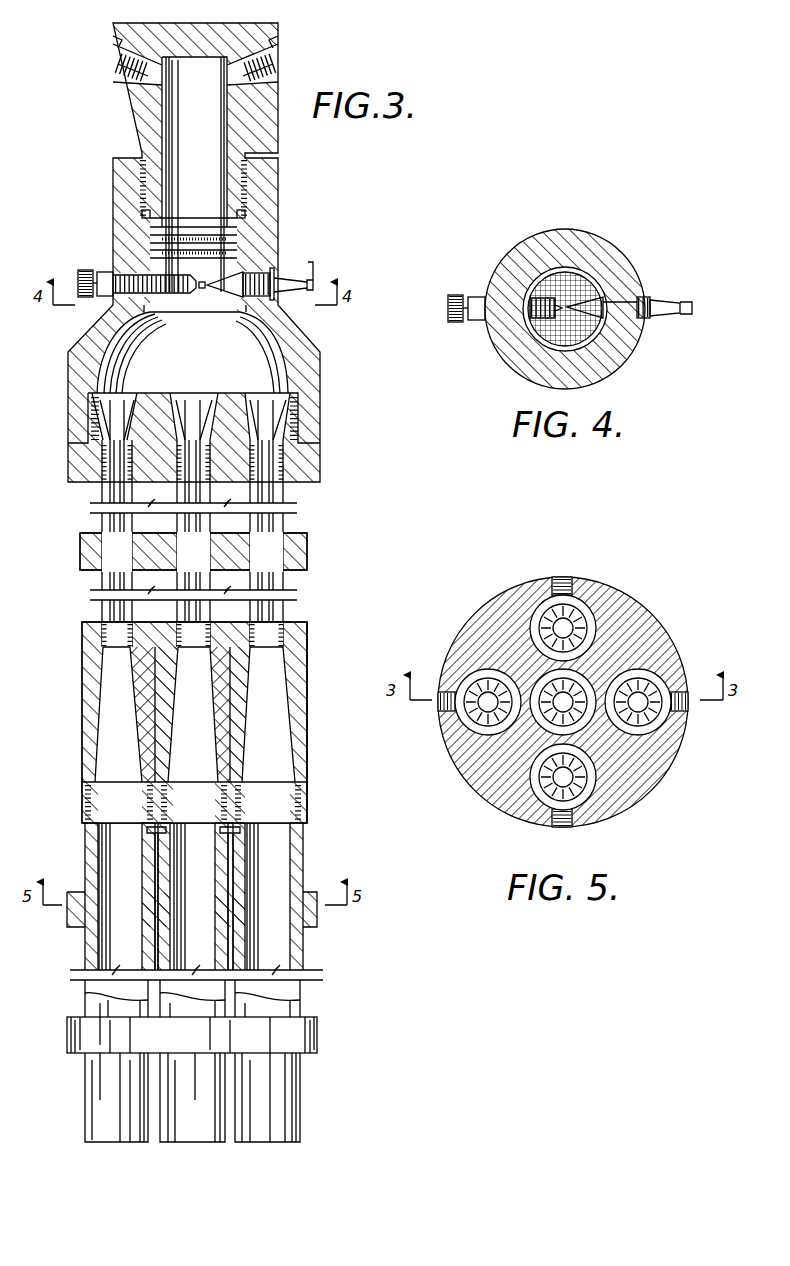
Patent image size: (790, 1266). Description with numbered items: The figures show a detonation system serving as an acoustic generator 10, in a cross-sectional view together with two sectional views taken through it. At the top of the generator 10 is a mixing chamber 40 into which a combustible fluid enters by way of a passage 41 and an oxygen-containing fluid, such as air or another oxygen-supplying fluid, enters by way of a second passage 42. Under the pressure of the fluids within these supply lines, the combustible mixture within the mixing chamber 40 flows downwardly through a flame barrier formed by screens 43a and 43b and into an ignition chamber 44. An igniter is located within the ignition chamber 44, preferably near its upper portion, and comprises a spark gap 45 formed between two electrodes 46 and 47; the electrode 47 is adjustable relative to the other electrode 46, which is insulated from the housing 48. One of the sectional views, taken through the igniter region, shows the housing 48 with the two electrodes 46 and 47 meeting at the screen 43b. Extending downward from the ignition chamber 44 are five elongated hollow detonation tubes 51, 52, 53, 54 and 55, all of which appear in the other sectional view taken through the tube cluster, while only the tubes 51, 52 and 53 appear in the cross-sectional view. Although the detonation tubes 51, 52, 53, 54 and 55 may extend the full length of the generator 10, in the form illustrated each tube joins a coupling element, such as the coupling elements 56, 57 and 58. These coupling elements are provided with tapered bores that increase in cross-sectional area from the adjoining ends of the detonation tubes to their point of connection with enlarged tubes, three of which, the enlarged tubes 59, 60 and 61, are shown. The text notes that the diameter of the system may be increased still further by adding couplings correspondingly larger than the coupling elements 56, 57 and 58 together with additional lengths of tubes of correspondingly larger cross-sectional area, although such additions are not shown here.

In FIG. 3, the generator 10 is at (352, 504).
In FIG. 3, the mixing chamber 40 is at (206, 100).
In FIG. 3, the passage 41 is at (262, 60).
In FIG. 3, the second passage 42 is at (122, 60).
In FIG. 3, the screen 43a is at (192, 240).
In FIG. 3, the screen 43b is at (205, 258).
In FIG. 4, the screen 43b is at (575, 272).
In FIG. 3, the ignition chamber 44 is at (216, 372).
In FIG. 3, the spark gap 45 is at (203, 290).
In FIG. 3, the electrode 46 is at (217, 300).
In FIG. 4, the electrode 46 is at (608, 292).
In FIG. 3, the electrode 47 is at (127, 282).
In FIG. 4, the electrode 47 is at (530, 322).
In FIG. 3, the housing 48 is at (68, 390).
In FIG. 4, the housing 48 is at (625, 352).
In FIG. 3, the detonation tube 51 is at (100, 497).
In FIG. 5, the detonation tube 51 is at (446, 726).
In FIG. 3, the detonation tube 52 is at (200, 497).
In FIG. 5, the detonation tube 52 is at (628, 620).
In FIG. 3, the detonation tube 53 is at (270, 535).
In FIG. 5, the detonation tube 53 is at (645, 705).
In FIG. 5, the detonation tube 54 is at (532, 817).
In FIG. 5, the detonation tube 55 is at (566, 578).
In FIG. 3, the coupling element 56 is at (82, 696).
In FIG. 3, the coupling element 57 is at (216, 640).
In FIG. 3, the coupling element 58 is at (305, 672).
In FIG. 3, the enlarged tube 59 is at (85, 845).
In FIG. 3, the enlarged tube 60 is at (216, 825).
In FIG. 3, the enlarged tube 61 is at (302, 950).